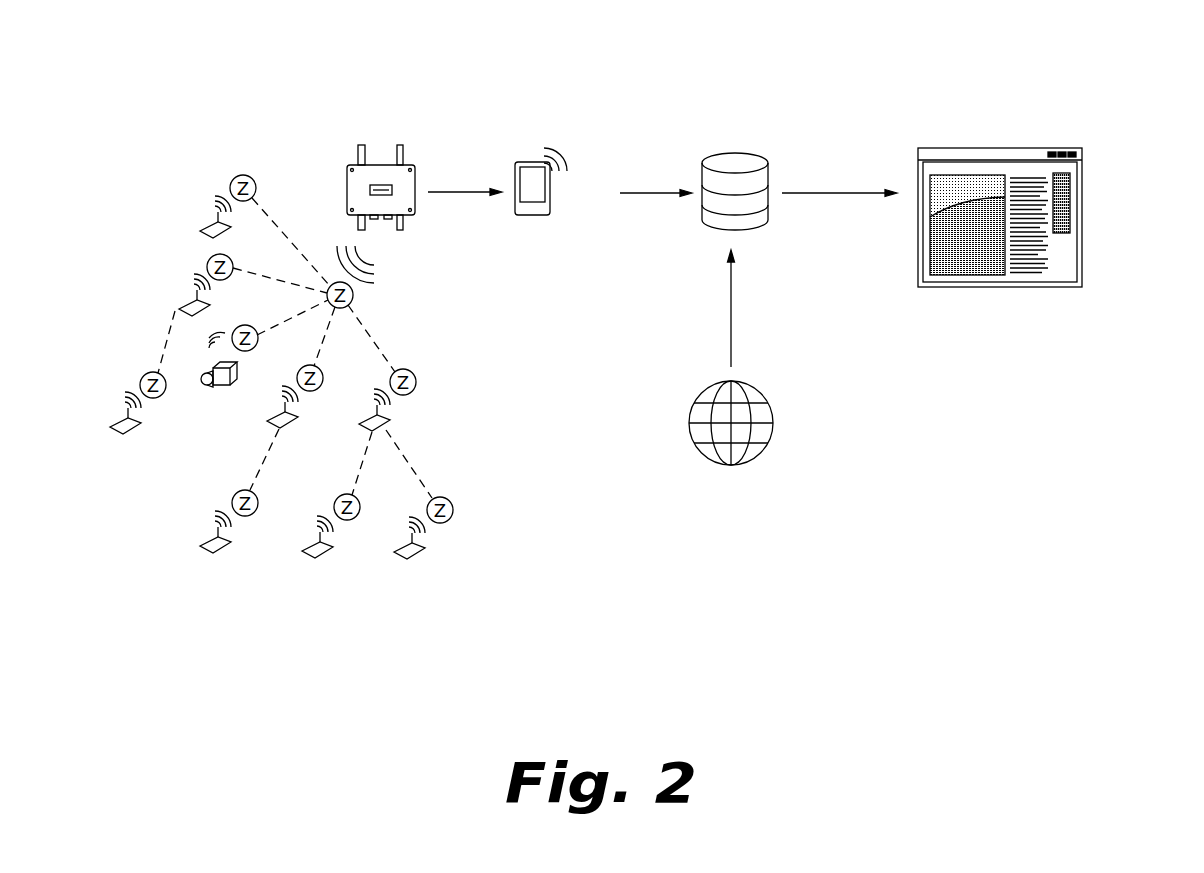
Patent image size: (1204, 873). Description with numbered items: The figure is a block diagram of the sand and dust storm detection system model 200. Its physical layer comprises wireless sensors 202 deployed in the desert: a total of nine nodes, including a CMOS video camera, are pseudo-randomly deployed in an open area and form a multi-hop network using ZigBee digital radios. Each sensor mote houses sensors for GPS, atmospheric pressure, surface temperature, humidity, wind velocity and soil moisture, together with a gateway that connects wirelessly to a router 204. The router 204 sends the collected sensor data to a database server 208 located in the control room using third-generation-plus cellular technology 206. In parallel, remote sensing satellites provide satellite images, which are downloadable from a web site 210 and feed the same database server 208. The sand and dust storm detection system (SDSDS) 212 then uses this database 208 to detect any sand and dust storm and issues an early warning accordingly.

The system model 200 is at (860, 390).
The wireless sensors 202 is at (177, 490).
The router 204 is at (415, 178).
The 3G+ technology 206 is at (527, 162).
The database server 208 is at (770, 173).
The web site 210 is at (762, 393).
The sand and dust storm detection system (SDSDS) 212 is at (1000, 277).